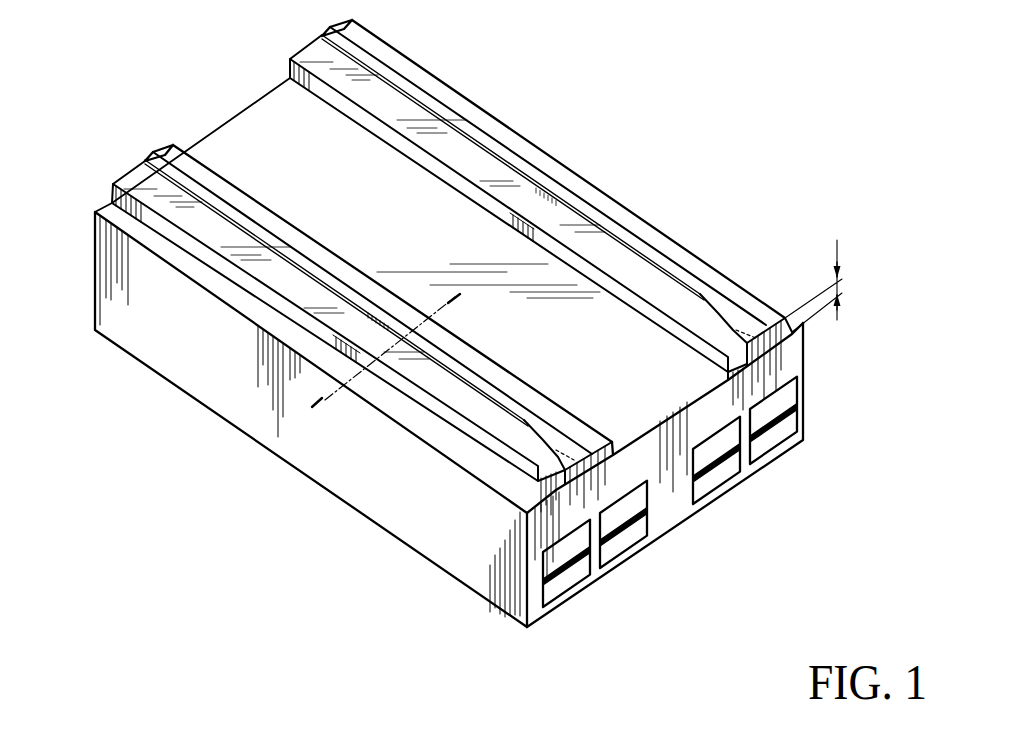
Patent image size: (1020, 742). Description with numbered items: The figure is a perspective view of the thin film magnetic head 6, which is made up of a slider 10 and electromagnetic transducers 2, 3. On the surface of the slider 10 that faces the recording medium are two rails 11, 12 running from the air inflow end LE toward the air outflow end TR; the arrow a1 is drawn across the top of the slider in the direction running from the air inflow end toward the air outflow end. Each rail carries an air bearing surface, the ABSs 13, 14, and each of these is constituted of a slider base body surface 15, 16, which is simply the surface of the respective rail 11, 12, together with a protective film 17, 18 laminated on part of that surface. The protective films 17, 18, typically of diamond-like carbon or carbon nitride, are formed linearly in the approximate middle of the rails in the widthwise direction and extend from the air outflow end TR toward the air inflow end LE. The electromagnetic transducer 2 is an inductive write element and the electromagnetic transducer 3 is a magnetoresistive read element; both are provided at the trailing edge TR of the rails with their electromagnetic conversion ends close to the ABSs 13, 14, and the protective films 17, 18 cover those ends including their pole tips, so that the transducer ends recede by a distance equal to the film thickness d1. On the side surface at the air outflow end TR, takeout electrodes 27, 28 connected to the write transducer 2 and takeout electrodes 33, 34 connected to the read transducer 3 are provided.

The thin film magnetic head 6 is at (458, 345).
The slider 10 is at (228, 405).
The rail 11 is at (111, 197).
The rail 12 is at (289, 66).
The ABS 13 is at (362, 330).
The ABS 14 is at (541, 215).
The slider base body surface 15 is at (383, 290).
The slider base body surface 16 is at (530, 143).
The protective film 17 is at (333, 281).
The protective film 18 is at (660, 250).
The electromagnetic transducer 2 is at (752, 323).
The electromagnetic transducer 3 is at (742, 322).
The takeout electrode 27 is at (625, 543).
The takeout electrode 28 is at (640, 493).
The takeout electrode 33 is at (550, 553).
The takeout electrode 34 is at (577, 577).
The air flow direction a1 is at (262, 125).
The air inflow end LE is at (133, 157).
The air outflow end TR is at (746, 355).
The film thickness d1 is at (840, 283).